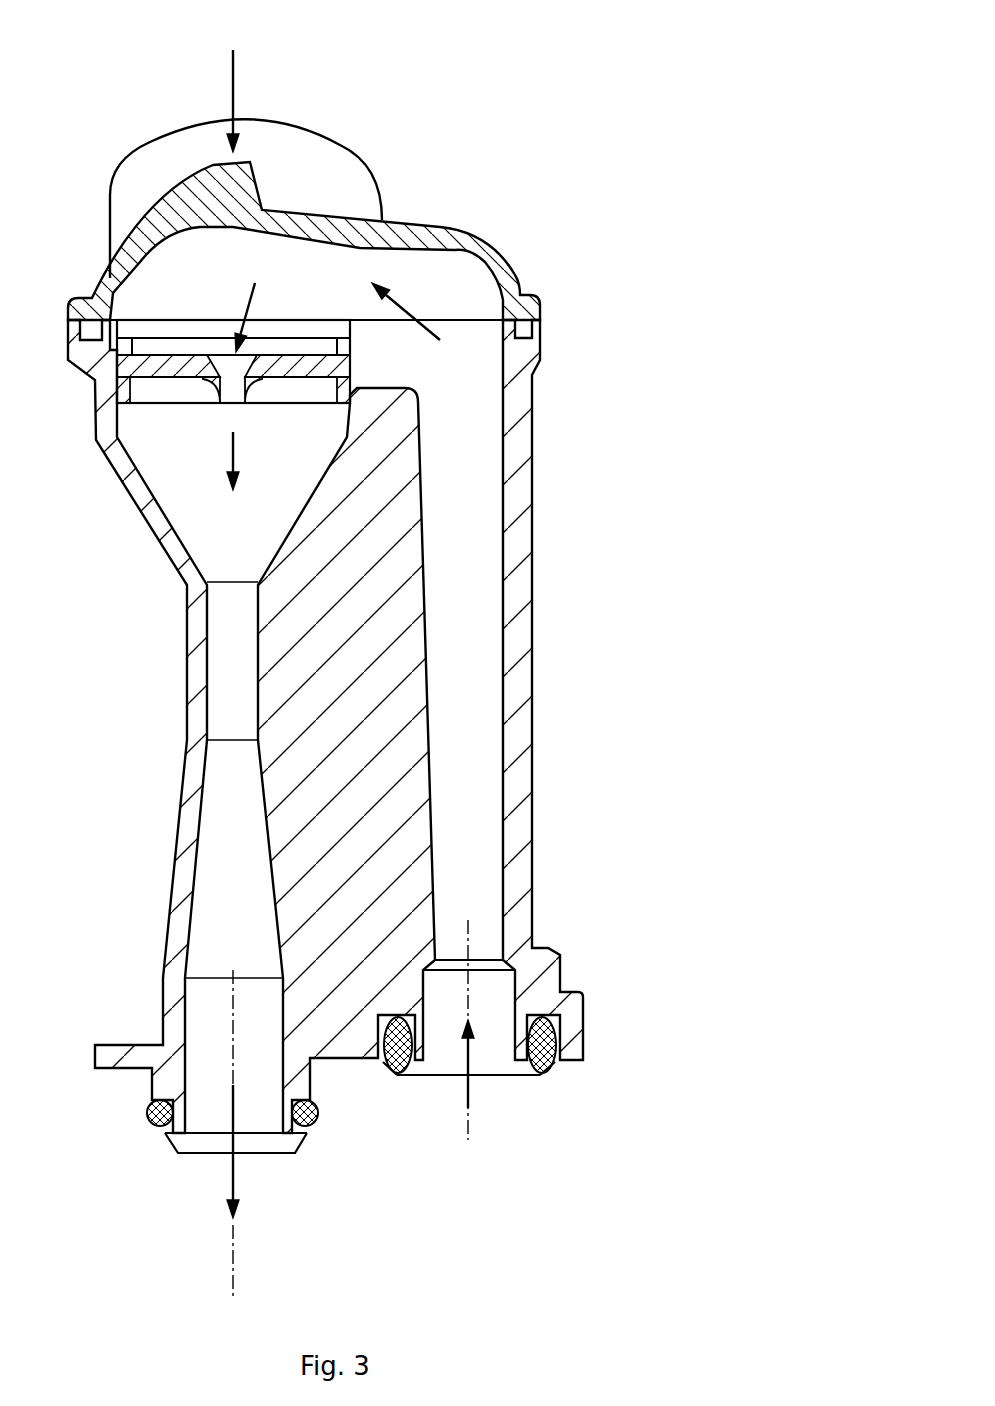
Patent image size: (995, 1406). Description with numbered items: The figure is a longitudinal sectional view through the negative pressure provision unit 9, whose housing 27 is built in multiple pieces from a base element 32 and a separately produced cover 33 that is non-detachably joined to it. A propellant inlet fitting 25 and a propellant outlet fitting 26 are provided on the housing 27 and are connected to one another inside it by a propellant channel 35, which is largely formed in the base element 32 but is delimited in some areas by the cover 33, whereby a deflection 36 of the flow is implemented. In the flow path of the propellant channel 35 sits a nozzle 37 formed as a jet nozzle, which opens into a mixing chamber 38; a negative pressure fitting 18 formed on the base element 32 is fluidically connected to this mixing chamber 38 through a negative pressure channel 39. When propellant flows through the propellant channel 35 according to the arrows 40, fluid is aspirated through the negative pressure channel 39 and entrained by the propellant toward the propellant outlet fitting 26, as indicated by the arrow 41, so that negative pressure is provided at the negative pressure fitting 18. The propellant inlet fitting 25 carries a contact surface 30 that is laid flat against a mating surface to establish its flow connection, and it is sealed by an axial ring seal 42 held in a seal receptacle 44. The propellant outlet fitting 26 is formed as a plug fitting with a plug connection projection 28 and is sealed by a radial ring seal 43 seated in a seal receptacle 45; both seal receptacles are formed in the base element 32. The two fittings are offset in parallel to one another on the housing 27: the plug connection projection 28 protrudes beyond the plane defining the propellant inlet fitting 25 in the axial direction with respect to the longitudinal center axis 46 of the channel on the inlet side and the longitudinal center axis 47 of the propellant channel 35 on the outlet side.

The negative pressure provision unit 9 is at (592, 170).
The negative pressure fitting 18 is at (280, 120).
The propellant inlet fitting 25 is at (441, 1100).
The propellant outlet fitting 26 is at (265, 1178).
The housing 27 is at (601, 281).
The plug connection projection 28 is at (300, 1145).
The contact surface 30 is at (418, 1085).
The base element 32 is at (522, 492).
The cover 33 is at (440, 228).
The propellant channel 35 is at (485, 590).
The deflection 36 is at (475, 352).
The nozzle 37 is at (212, 403).
The mixing chamber 38 is at (213, 578).
The negative pressure channel 39 is at (147, 160).
The arrows 40 is at (398, 305).
The arrow 41 is at (235, 447).
The axial ring seal 42 is at (548, 1033).
The radial ring seal 43 is at (148, 1100).
The seal receptacle 44 is at (560, 1074).
The seal receptacle 45 is at (160, 1135).
The longitudinal center axis 46 is at (470, 1138).
The longitudinal center axis 47 is at (232, 1280).